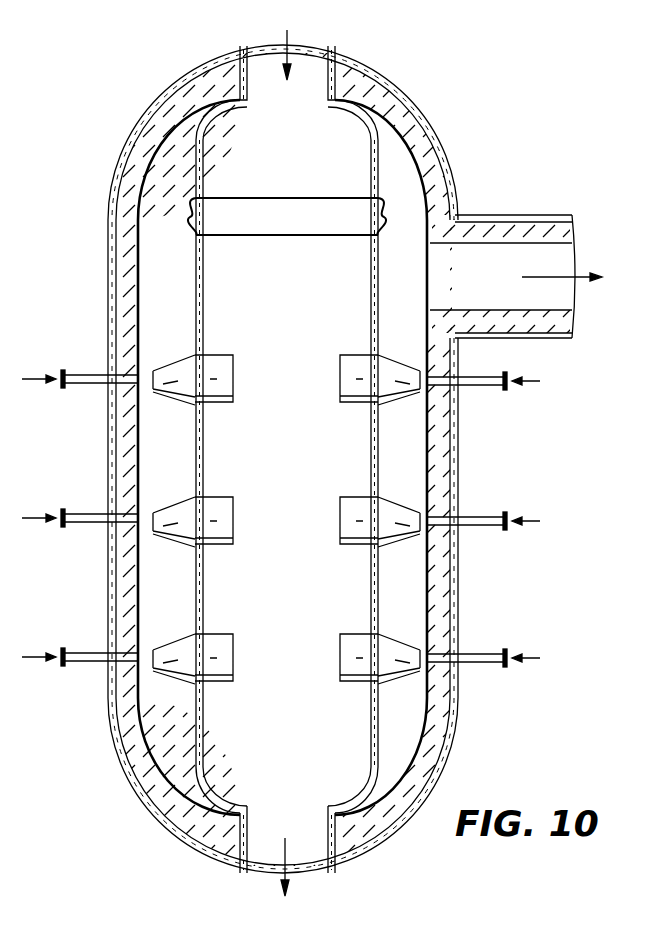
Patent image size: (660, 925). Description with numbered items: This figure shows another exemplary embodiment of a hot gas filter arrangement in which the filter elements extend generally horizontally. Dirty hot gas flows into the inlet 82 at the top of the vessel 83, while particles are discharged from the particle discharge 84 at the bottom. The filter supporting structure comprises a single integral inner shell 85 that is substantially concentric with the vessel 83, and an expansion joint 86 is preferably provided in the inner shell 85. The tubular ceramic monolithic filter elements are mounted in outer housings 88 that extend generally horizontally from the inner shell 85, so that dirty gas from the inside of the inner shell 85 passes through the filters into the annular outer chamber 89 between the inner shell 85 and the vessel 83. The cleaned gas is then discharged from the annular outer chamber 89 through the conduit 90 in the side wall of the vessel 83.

The inlet 82 is at (306, 65).
The vessel 83 is at (444, 150).
The particle discharge 84 is at (308, 866).
The inner shell 85 is at (203, 282).
The expansion joint 86 is at (192, 208).
The outer housings 88 is at (335, 343).
The annular outer chamber 89 is at (158, 438).
The conduit 90 is at (563, 296).